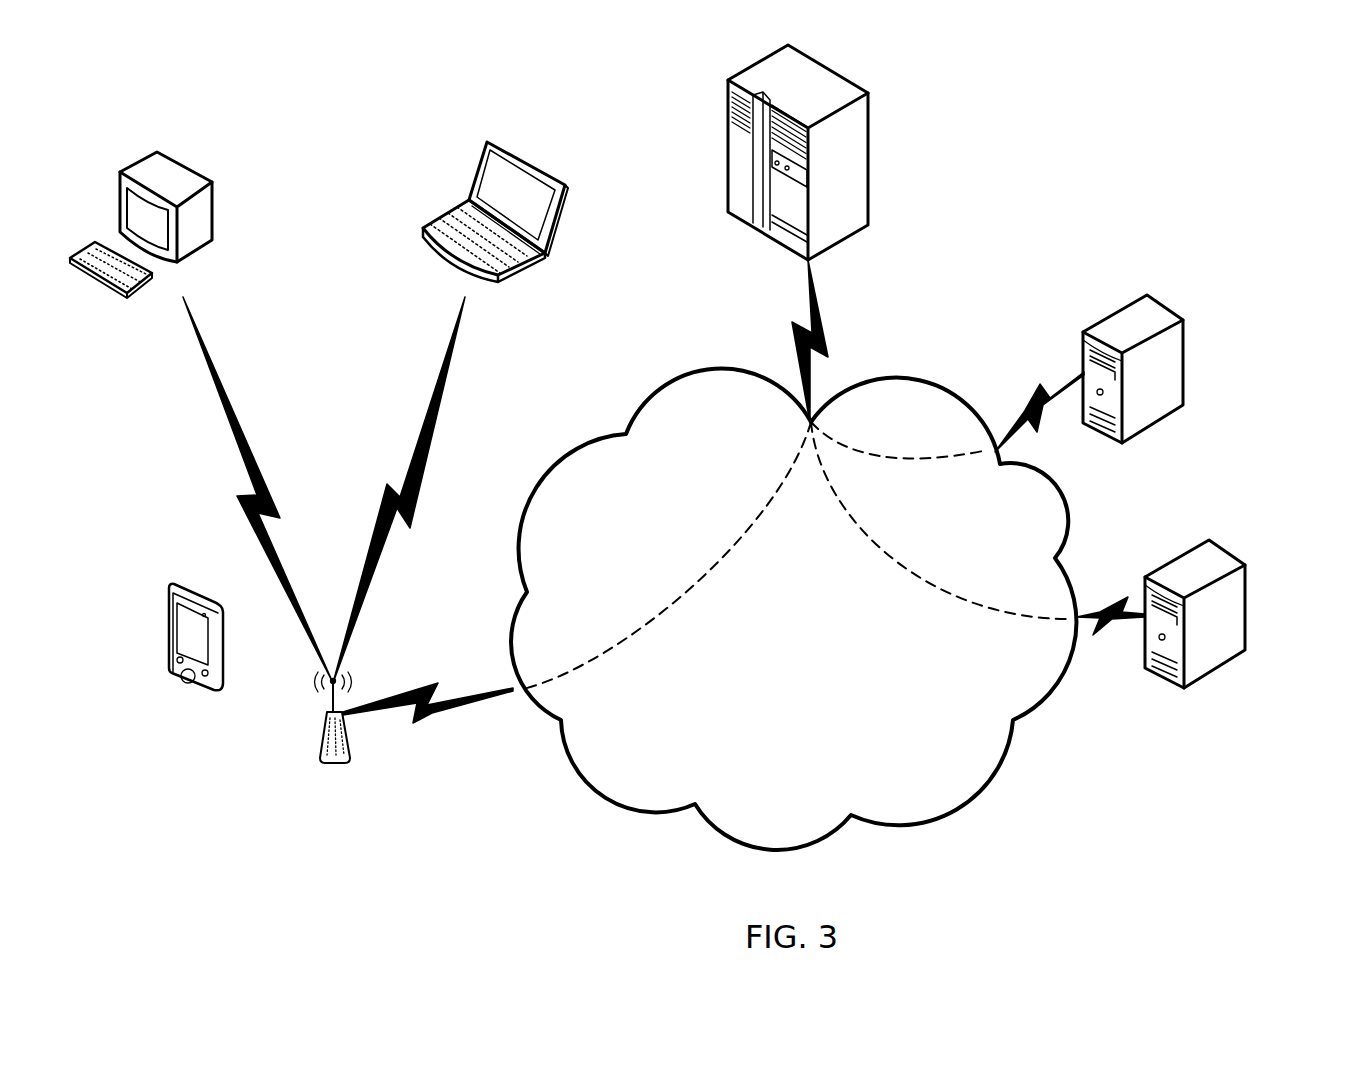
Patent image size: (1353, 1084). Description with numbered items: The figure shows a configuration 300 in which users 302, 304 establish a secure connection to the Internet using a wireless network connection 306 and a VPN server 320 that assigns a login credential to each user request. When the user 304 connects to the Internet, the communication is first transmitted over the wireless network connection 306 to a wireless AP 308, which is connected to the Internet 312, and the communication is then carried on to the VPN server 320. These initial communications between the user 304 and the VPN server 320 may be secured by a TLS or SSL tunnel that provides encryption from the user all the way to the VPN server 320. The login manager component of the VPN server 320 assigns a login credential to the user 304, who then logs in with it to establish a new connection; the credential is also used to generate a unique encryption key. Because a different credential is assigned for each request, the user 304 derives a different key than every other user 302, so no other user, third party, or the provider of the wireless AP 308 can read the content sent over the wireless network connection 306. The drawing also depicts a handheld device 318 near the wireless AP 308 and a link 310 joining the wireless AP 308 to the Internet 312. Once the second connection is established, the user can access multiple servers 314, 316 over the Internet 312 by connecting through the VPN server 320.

The configuration 300 is at (1306, 106).
The user 302 is at (155, 150).
The user 304 is at (522, 150).
The wireless network connection 306 is at (223, 387).
The wireless AP 308 is at (318, 740).
The network connection 310 is at (427, 722).
The Internet 312 is at (793, 608).
The server 314 is at (1165, 305).
The server 316 is at (1228, 550).
The handheld device 318 is at (193, 693).
The VPN server 320 is at (870, 133).